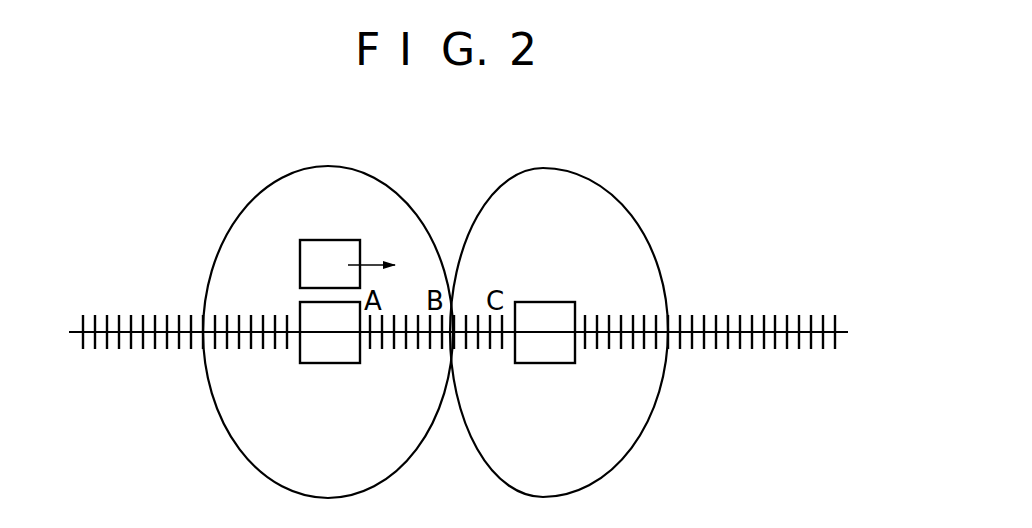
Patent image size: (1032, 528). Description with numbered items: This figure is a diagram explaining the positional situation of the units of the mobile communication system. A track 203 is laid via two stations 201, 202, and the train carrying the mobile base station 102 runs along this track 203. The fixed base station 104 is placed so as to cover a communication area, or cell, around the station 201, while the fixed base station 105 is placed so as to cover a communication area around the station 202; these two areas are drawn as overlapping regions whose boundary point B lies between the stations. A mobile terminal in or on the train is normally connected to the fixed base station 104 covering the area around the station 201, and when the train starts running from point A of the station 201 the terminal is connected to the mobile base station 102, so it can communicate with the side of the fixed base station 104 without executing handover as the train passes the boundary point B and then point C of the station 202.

The mobile base station 102 is at (323, 240).
The fixed base station 104 is at (304, 170).
The fixed base station 105 is at (563, 170).
The station 201 is at (353, 364).
The station 202 is at (570, 364).
The track 203 is at (750, 347).